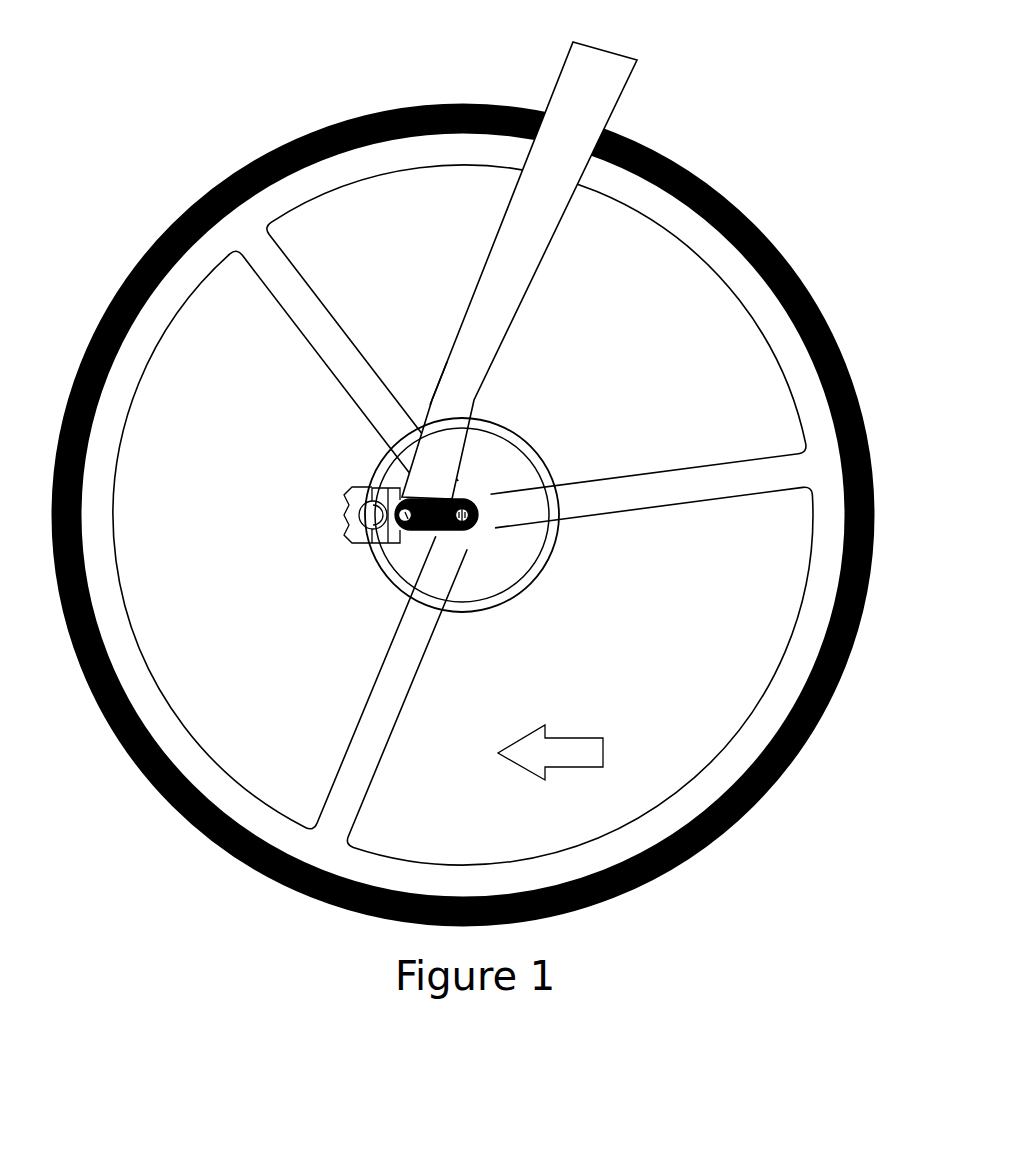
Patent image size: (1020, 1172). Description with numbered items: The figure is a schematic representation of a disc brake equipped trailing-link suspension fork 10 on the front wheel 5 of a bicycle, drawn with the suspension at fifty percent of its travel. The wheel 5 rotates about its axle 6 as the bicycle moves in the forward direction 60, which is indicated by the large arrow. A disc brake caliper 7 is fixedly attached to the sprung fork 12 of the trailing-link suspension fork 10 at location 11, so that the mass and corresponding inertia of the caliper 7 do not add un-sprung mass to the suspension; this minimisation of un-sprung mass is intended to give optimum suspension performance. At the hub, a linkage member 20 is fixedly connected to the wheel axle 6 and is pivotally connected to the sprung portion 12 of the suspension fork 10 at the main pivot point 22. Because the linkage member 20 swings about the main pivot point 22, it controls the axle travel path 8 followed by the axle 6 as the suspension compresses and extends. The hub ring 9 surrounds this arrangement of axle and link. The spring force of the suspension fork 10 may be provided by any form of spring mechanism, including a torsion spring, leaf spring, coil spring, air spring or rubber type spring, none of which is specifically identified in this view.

The wheel 5 is at (238, 227).
The trailing-link suspension fork 10 is at (586, 90).
The sprung fork 12 is at (437, 387).
The location 11 is at (372, 487).
The disc brake caliper 7 is at (356, 516).
The hub ring 9 is at (530, 578).
The linkage member 20 is at (452, 532).
The main pivot point 22 is at (410, 536).
The axle 6 is at (472, 496).
The axle travel path 8 is at (461, 497).
The forward direction 60 is at (532, 753).